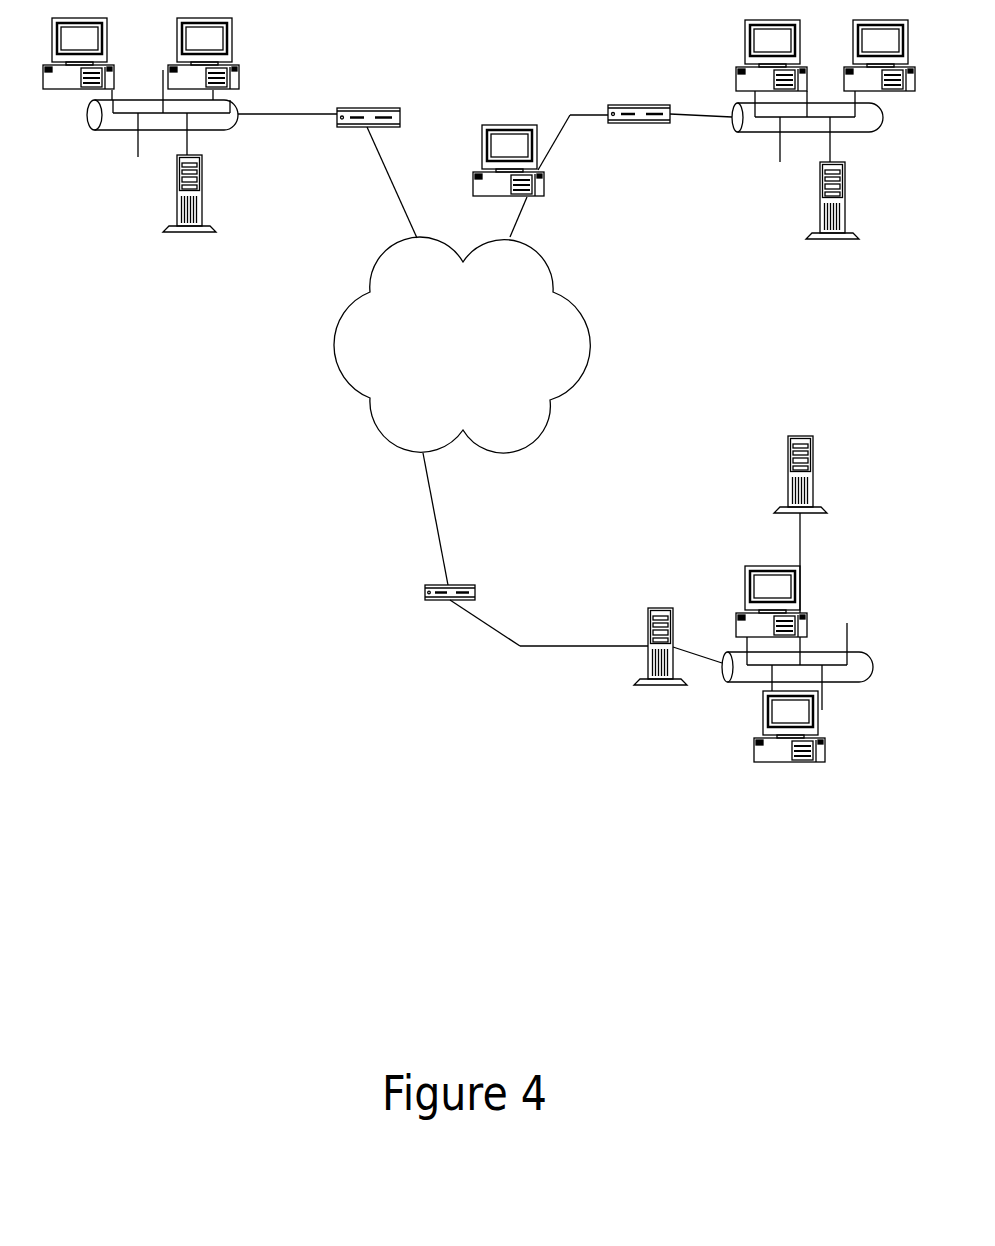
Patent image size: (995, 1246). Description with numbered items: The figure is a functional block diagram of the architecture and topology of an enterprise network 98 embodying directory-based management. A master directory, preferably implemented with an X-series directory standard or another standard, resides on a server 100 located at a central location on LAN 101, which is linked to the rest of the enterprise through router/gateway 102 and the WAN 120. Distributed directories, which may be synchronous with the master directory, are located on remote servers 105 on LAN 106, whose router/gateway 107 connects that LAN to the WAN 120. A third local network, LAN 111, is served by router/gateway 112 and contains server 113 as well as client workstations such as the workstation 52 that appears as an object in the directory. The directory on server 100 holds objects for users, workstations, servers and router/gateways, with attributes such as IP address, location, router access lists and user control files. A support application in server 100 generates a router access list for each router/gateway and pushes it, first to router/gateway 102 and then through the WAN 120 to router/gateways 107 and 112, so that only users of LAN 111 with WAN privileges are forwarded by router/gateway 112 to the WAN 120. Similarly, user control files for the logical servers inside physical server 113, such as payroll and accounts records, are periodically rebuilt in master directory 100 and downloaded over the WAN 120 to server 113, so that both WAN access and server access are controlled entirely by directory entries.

The client computer 52 is at (508, 137).
The enterprise network 98 is at (337, 556).
The server 100 is at (843, 455).
The LAN 101 is at (827, 126).
The router/gateway 102 is at (639, 102).
The remote server 105 is at (199, 250).
The LAN 106 is at (462, 204).
The router/gateway 107 is at (368, 95).
The LAN 111 is at (821, 666).
The router/gateway 112 is at (449, 614).
The server 113 is at (660, 666).
The WAN 120 is at (462, 345).